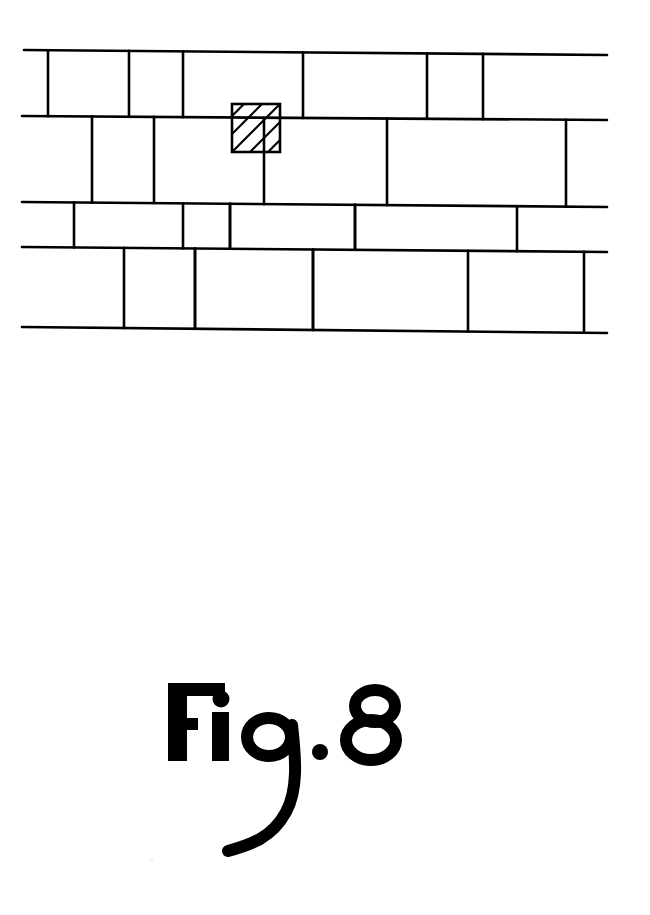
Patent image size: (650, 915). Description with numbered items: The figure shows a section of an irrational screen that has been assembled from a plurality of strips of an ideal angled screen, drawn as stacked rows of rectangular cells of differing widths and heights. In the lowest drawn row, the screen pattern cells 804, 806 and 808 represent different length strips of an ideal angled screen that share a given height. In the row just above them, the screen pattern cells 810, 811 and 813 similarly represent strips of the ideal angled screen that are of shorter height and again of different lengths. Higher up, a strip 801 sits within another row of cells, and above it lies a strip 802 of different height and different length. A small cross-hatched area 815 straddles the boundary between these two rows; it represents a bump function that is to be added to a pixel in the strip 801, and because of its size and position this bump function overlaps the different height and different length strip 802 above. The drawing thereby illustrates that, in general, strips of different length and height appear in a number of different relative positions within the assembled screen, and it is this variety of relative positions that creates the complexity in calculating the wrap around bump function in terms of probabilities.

The strip 801 is at (209, 160).
The strip 802 is at (334, 53).
The screen pattern cell 804 is at (159, 288).
The screen pattern cell 806 is at (254, 290).
The screen pattern cell 808 is at (390, 291).
The screen pattern cell 810 is at (206, 225).
The screen pattern cell 811 is at (292, 227).
The screen pattern cell 813 is at (436, 228).
The area 815 is at (248, 104).